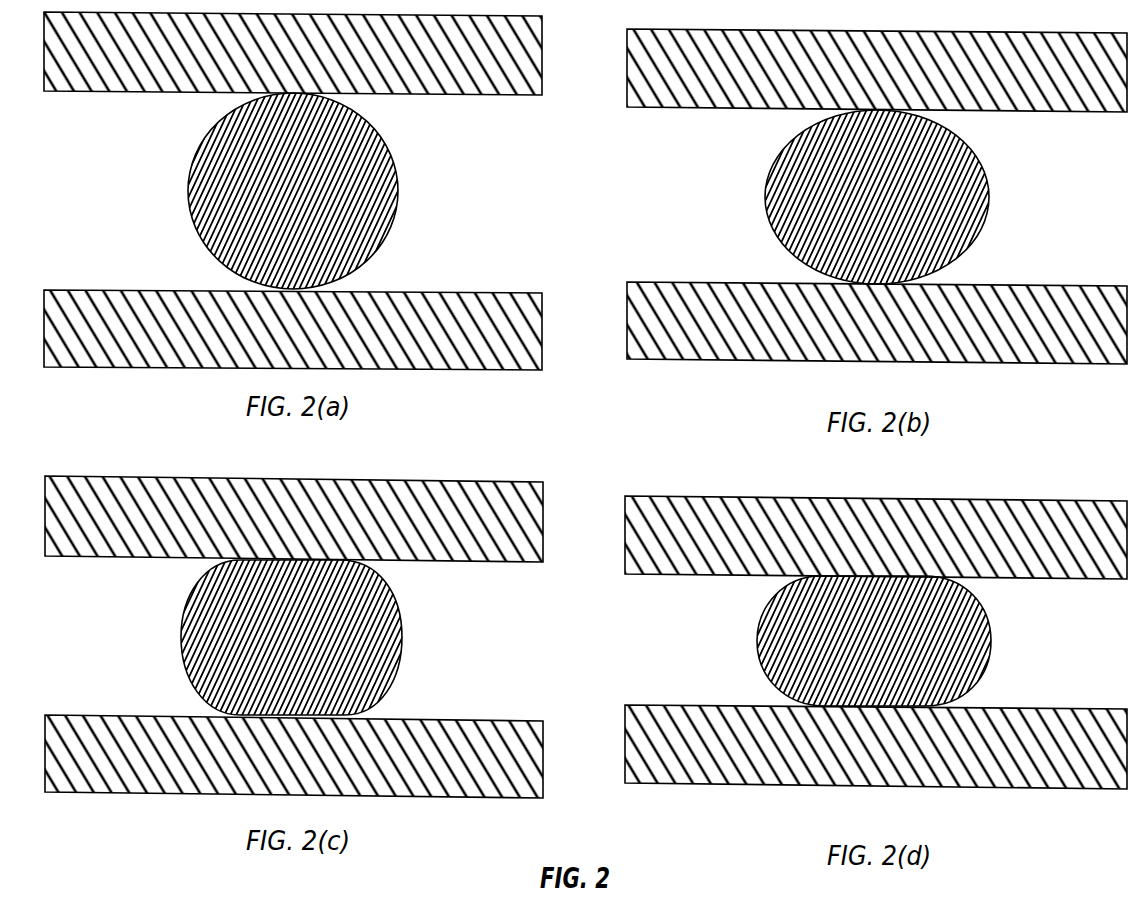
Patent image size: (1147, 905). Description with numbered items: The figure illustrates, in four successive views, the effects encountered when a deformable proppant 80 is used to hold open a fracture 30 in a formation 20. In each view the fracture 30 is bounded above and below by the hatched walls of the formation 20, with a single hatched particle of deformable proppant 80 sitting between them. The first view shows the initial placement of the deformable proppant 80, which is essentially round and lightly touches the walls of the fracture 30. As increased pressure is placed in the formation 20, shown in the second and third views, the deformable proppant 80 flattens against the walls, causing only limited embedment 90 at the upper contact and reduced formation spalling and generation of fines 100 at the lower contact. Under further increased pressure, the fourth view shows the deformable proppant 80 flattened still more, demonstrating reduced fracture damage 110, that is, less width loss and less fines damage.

The formation 20 is at (122, 91).
The fracture 30 is at (134, 200).
The deformable proppant 80 is at (197, 240).
The limited embedment 90 is at (896, 107).
The reduced formation spalling and generation of fines 100 is at (964, 273).
The reduced fracture damage 110 is at (973, 699).